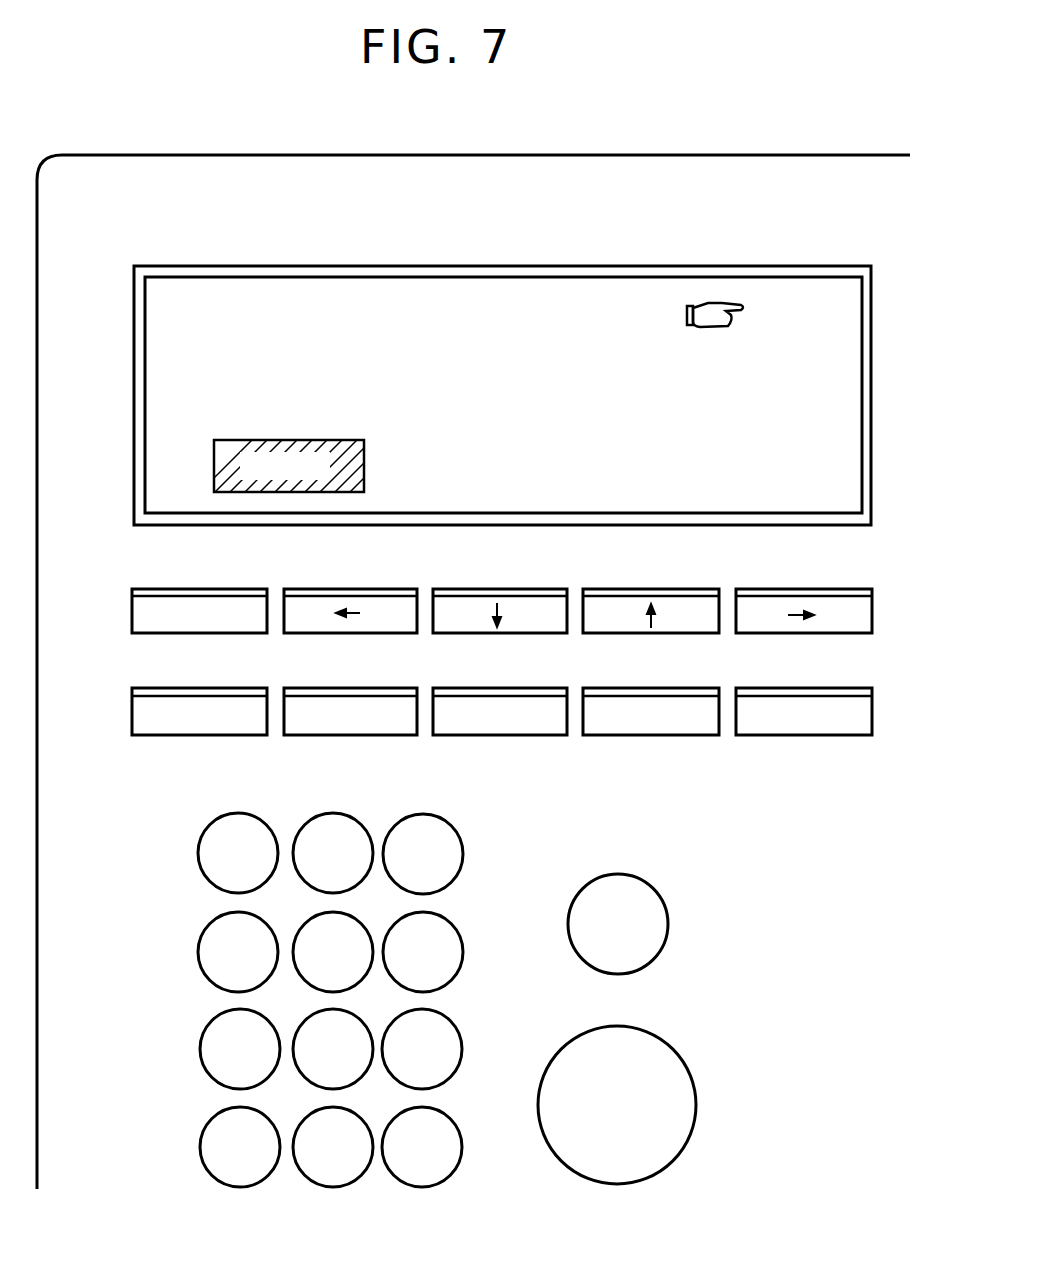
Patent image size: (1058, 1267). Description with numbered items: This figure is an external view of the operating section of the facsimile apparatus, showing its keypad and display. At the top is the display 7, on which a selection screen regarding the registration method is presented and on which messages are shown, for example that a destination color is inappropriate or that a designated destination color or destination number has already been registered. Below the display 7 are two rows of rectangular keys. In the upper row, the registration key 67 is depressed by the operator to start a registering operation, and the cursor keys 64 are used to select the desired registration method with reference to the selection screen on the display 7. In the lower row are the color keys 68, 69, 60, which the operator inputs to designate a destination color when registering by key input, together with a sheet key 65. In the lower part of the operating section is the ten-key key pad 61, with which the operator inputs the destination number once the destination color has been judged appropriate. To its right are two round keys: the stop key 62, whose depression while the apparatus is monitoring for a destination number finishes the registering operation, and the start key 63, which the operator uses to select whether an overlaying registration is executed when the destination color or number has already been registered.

The display 7 is at (872, 335).
The color key 60 is at (538, 736).
The ten-key key pad 61 is at (208, 1091).
The stop key 62 is at (668, 924).
The start key 63 is at (697, 1100).
The cursor keys 64 is at (872, 614).
The sheet key 65 is at (872, 704).
The registration key 67 is at (132, 612).
The color key 68 is at (132, 717).
The color key 69 is at (330, 736).